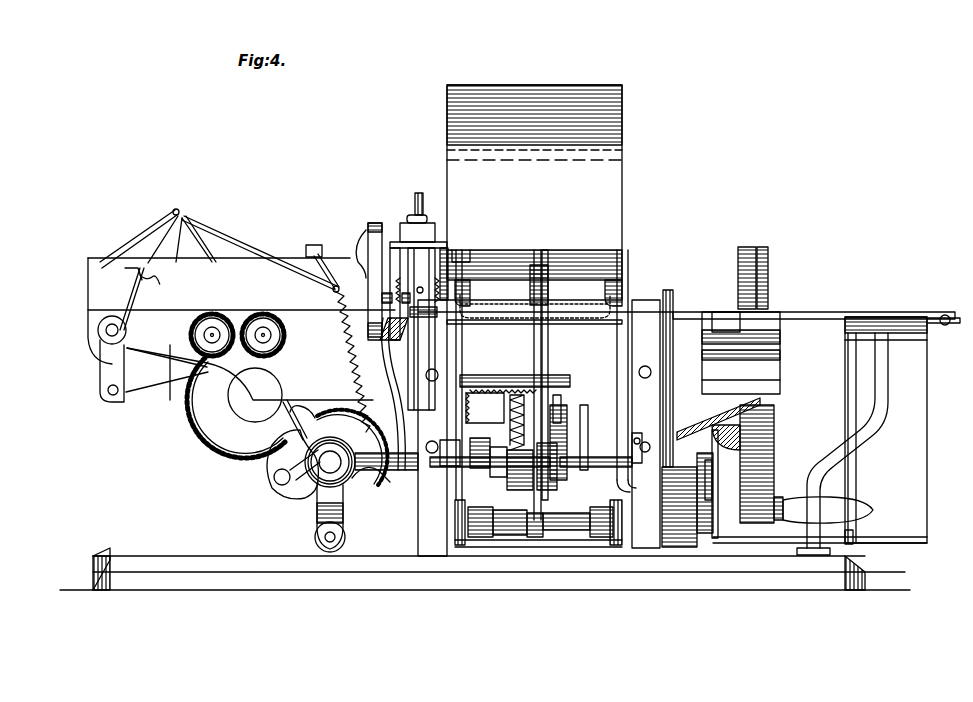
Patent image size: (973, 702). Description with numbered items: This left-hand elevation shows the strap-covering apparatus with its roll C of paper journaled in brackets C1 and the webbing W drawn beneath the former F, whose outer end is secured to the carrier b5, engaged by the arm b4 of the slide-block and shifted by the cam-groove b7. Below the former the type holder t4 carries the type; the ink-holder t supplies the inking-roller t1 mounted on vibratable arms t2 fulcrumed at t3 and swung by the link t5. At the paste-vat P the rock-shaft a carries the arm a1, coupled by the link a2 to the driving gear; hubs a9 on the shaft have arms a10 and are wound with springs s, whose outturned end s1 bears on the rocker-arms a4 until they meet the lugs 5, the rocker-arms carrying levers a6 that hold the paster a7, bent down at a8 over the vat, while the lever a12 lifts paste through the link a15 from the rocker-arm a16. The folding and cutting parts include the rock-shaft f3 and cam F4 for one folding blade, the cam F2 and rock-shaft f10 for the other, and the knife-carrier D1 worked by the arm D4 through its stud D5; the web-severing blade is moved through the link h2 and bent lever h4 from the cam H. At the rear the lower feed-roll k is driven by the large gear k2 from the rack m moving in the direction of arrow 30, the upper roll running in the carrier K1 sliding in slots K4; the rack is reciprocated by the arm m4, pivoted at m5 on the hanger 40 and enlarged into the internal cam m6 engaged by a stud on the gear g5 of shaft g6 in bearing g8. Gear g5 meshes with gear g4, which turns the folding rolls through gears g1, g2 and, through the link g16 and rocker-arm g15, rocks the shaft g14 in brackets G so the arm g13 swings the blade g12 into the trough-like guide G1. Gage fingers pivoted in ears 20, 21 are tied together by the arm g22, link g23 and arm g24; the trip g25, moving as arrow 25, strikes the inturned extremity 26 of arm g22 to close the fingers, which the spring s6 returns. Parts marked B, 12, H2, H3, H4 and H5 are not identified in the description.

The brackets G is at (241, 341).
The trough-like guide G1 is at (96, 268).
The rock-shaft g14 is at (106, 335).
The rocker-arm g15 is at (102, 365).
The link g16 is at (142, 392).
The gear g1 is at (192, 335).
The gear g2 is at (285, 345).
The rocking arm g13 is at (176, 208).
The ear 20 is at (160, 245).
The thin blade or finger g12 is at (198, 238).
The arm g22 is at (180, 240).
The link g23 is at (258, 252).
The ear 21 is at (314, 246).
The trip g25 is at (118, 283).
The inturned lower extremity 26 is at (131, 293).
The arrow 25 is at (148, 284).
The downturned outer end or arm g24 is at (325, 262).
The lower webbing-feed roll k is at (392, 280).
The spring s6 is at (365, 385).
The arm m4 is at (268, 428).
The gear g4 is at (228, 432).
The internal cam m6 is at (272, 476).
The rack m is at (480, 375).
The shaft g6 is at (334, 460).
The hanger 40 is at (320, 505).
The pivot m5 is at (328, 548).
The gear g5 is at (362, 480).
The bearing g8 is at (352, 500).
The cam H is at (420, 516).
The link h2 is at (372, 225).
The bent lever h4 is at (392, 248).
The rock-shaft f3 is at (400, 395).
The brackets C1 is at (425, 240).
The roll of paper C is at (622, 150).
The slots K4 is at (440, 248).
The carrier K1 is at (430, 262).
The paste-vat P is at (566, 298).
The bent portion of paster a8 is at (462, 280).
The paster a7 is at (538, 268).
The lever a12 is at (540, 265).
The rocker-arms a4 is at (466, 352).
The levers a6 is at (470, 322).
The large gear k2 is at (476, 428).
The link a15 is at (540, 372).
The roller or stud D5 is at (552, 400).
The arrow 30 is at (557, 395).
The arm D4 is at (552, 425).
The rock-shaft f10 is at (586, 418).
The shaft B is at (580, 462).
The cam F4 is at (445, 456).
The pin 12 is at (506, 510).
The spring end s1 is at (646, 506).
The cam F2 is at (485, 542).
The hubs a9 is at (605, 545).
The rocker-arm a16 is at (536, 540).
The rock-shaft a is at (572, 545).
The shaft D1 is at (552, 545).
The springs s is at (462, 545).
The lugs or projections 5 is at (616, 545).
The former F is at (690, 312).
The carrier b5 is at (778, 372).
The webbing W is at (802, 318).
The column H2 is at (747, 247).
The cam-groove b7 is at (768, 270).
The link t5 is at (722, 395).
The arm b4 is at (716, 390).
The type holder or bed t4 is at (707, 450).
The arm a10 is at (778, 432).
The link a2 is at (698, 480).
The arm a1 is at (700, 500).
The handle H3 is at (790, 498).
The inking-roller t1 is at (880, 326).
The ink-supplying pad or ink-holder t is at (926, 340).
The vibratable arms t2 is at (926, 448).
The fulcrum t3 is at (878, 552).
The base block H5 is at (680, 548).
The base H4 is at (752, 575).